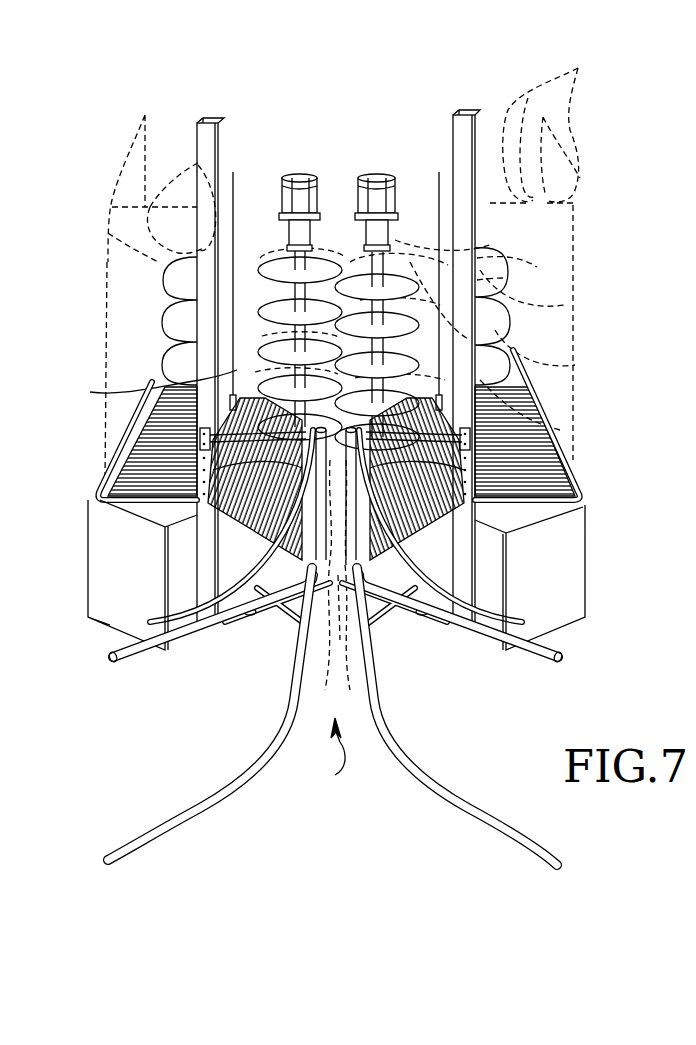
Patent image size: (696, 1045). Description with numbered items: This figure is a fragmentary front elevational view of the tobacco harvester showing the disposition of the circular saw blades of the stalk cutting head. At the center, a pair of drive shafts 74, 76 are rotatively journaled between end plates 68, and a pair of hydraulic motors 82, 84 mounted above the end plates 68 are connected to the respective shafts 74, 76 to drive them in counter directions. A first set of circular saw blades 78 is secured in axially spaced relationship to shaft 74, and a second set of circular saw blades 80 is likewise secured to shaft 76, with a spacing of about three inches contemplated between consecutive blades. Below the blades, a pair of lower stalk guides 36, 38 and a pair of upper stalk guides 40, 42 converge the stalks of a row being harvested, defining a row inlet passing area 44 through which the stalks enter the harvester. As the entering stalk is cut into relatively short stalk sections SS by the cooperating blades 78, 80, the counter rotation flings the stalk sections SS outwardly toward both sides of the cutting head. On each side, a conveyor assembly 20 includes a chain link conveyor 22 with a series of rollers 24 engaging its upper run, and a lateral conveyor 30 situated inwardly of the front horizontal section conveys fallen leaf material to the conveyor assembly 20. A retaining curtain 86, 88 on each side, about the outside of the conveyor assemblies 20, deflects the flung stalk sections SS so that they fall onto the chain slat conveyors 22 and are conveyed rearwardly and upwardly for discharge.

The conveyor assembly 20 is at (120, 458).
The chain link conveyor 22 is at (152, 410).
The rollers 24 is at (477, 320).
The lateral conveyor 30 is at (165, 527).
The lower stalk guide 36 is at (242, 787).
The lower stalk guide 38 is at (413, 777).
The upper stalk guide 40 is at (183, 632).
The upper stalk guide 42 is at (545, 658).
The row inlet passing area 44 is at (324, 751).
The end plate 68 is at (328, 257).
The drive shaft 74 is at (258, 280).
The drive shaft 76 is at (477, 248).
The circular saw blade 78 is at (260, 332).
The circular saw blade 80 is at (505, 402).
The hydraulic motor 82 is at (290, 175).
The hydraulic motor 84 is at (385, 175).
The retaining curtain 86 is at (120, 167).
The retaining curtain 88 is at (563, 237).
The stalk sections SS is at (512, 100).